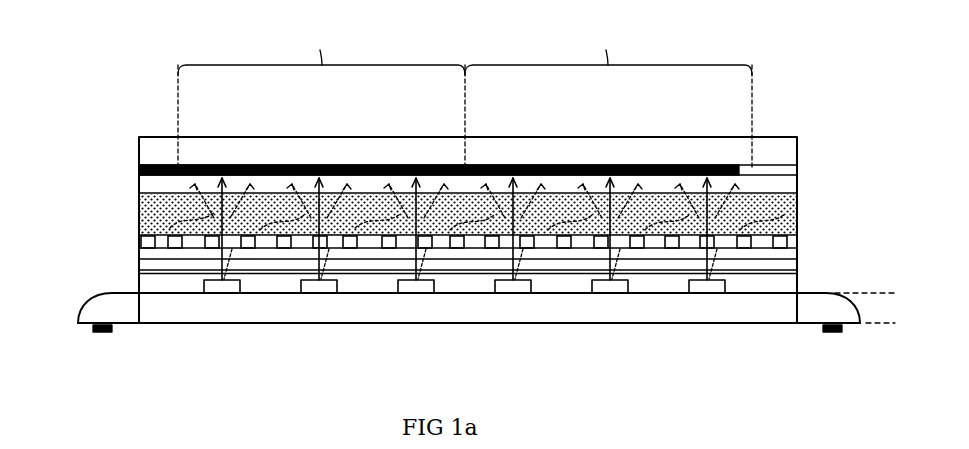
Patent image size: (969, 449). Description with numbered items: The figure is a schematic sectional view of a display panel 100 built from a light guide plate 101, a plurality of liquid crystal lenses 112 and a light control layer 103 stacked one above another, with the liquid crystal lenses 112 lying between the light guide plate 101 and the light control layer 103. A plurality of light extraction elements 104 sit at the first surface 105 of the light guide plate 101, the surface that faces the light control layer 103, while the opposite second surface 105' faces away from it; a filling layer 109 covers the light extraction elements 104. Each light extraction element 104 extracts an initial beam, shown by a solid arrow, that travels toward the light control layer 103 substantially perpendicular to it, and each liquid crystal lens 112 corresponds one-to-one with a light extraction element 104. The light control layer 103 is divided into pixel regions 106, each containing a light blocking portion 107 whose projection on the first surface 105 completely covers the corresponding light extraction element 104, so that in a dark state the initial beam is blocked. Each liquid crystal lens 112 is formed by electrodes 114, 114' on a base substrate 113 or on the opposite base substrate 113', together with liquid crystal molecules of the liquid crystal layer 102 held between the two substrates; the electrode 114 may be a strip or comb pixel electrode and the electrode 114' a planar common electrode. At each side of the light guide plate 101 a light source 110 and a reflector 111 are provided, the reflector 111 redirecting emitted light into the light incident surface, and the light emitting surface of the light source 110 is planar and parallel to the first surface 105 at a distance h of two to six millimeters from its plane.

The display panel 100 is at (80, 34).
The light guide plate 101 is at (183, 313).
The liquid crystal layer 102 is at (790, 210).
The light control layer 103 is at (147, 173).
The light extraction elements 104 is at (417, 287).
The first surface 105 is at (505, 280).
The second surface 105' is at (468, 350).
The pixel regions 106 is at (465, 95).
The light blocking portion 107 is at (510, 170).
The filling layer 109 is at (557, 287).
The light source 110 is at (112, 330).
The reflector 111 is at (90, 298).
The liquid crystal lenses 112 is at (153, 216).
The base substrate 113 is at (416, 266).
The base substrate 113' is at (508, 159).
The electrode 114 is at (506, 235).
The electrode 114' is at (416, 239).
The distance h is at (865, 308).